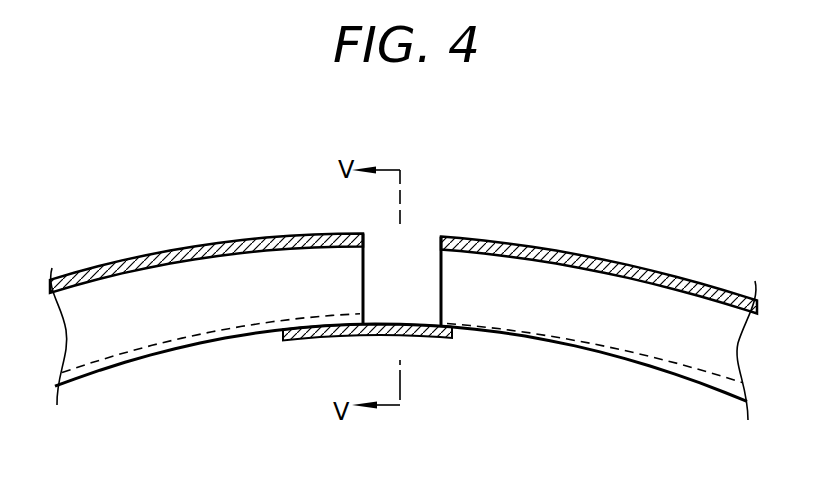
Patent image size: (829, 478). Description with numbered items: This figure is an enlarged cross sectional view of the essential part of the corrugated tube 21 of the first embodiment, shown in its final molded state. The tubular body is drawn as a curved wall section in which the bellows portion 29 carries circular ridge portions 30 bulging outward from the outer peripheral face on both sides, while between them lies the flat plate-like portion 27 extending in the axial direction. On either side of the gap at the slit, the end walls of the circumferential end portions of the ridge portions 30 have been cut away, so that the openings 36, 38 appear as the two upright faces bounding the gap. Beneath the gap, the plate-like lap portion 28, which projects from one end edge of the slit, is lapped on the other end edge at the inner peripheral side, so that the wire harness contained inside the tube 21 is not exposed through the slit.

The corrugated tube 21 is at (557, 225).
The plate-like portion 27 is at (401, 308).
The lap portion 28 is at (318, 341).
The bellows portion 29 is at (717, 273).
The ridge portions 30 is at (182, 247).
The opening 36 is at (372, 276).
The opening 38 is at (429, 297).